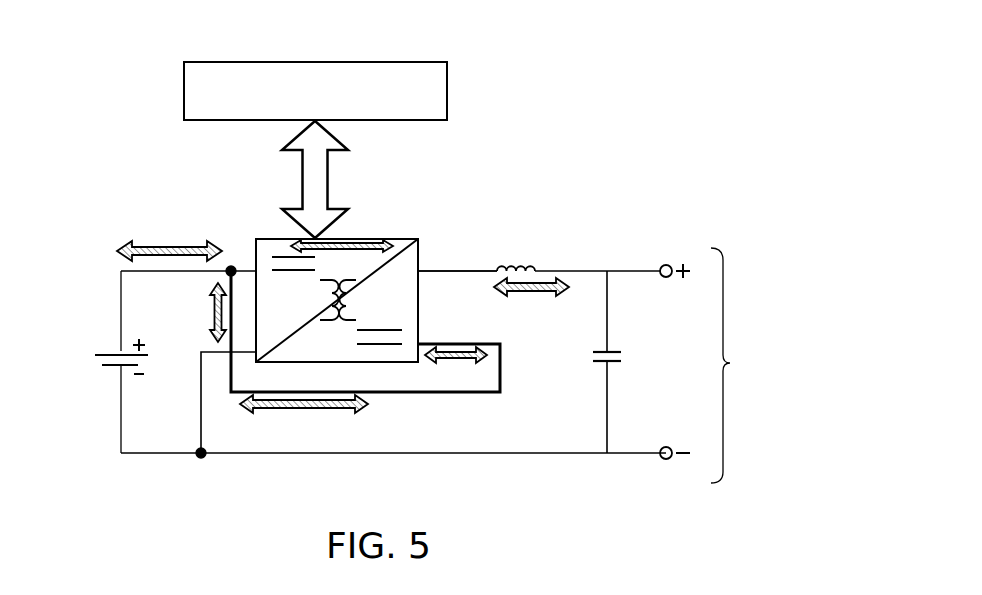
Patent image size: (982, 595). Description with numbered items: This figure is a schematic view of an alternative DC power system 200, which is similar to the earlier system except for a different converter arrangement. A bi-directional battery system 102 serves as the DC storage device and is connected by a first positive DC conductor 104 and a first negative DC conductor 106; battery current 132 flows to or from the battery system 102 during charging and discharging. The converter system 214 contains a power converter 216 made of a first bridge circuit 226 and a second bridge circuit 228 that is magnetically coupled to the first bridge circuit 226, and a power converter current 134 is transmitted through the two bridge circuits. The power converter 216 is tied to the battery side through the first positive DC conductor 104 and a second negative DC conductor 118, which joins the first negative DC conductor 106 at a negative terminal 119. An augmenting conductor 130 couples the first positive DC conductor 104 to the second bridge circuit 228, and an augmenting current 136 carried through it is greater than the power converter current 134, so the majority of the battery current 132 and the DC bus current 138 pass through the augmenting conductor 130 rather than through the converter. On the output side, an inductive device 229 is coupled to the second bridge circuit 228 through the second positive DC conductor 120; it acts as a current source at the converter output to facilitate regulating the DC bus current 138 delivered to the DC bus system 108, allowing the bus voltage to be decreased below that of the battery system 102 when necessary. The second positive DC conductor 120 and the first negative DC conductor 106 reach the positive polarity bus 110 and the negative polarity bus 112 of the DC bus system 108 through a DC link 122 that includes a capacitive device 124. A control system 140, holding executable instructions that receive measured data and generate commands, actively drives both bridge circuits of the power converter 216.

The control system 140 is at (334, 104).
The converter system 214 is at (360, 212).
The DC power system 200 is at (189, 205).
The first positive DC conductor 104 is at (121, 305).
The battery system 102 is at (96, 360).
The battery current 132 is at (147, 242).
The first negative DC conductor 106 is at (137, 455).
The negative terminal 119 is at (205, 460).
The second negative DC conductor 118 is at (205, 438).
The augmenting conductor 130 is at (402, 393).
The augmenting current 136 is at (305, 413).
The first bridge circuit 226 is at (273, 240).
The power converter 216 is at (420, 228).
The power converter current 134 is at (363, 240).
The second bridge circuit 228 is at (407, 313).
The second positive DC conductor 120 is at (470, 270).
The inductive device 229 is at (528, 262).
The DC bus current 138 is at (541, 283).
The positive polarity bus 110 is at (628, 270).
The negative polarity bus 112 is at (630, 455).
The capacitive device 124 is at (593, 355).
The DC link 122 is at (616, 372).
The DC bus system 108 is at (744, 365).